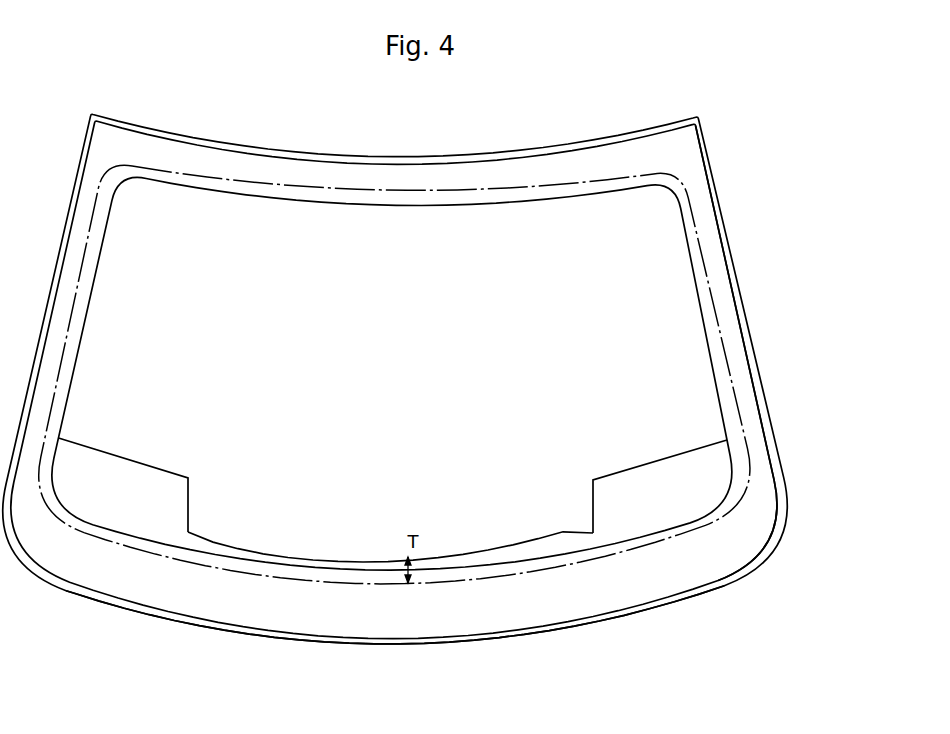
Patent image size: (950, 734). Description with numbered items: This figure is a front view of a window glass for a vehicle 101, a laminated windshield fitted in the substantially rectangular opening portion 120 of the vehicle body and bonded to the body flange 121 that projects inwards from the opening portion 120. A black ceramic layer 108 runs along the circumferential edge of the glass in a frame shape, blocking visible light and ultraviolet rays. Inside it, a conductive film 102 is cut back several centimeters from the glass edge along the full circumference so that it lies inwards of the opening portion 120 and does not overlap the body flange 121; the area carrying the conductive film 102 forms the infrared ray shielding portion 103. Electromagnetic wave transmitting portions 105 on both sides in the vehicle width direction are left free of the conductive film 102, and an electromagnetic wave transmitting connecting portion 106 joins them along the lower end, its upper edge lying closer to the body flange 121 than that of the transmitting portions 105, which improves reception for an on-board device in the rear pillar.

The window glass for a vehicle 101 is at (623, 140).
The opening portion 120 is at (713, 173).
The conductive film 102 is at (695, 277).
The body flange 121 is at (727, 362).
The infrared ray shielding portion 103 is at (492, 527).
The electromagnetic wave transmitting portions 105 is at (120, 485).
The electromagnetic wave transmitting connecting portion 106 is at (352, 563).
The black ceramic layer 108 is at (432, 612).